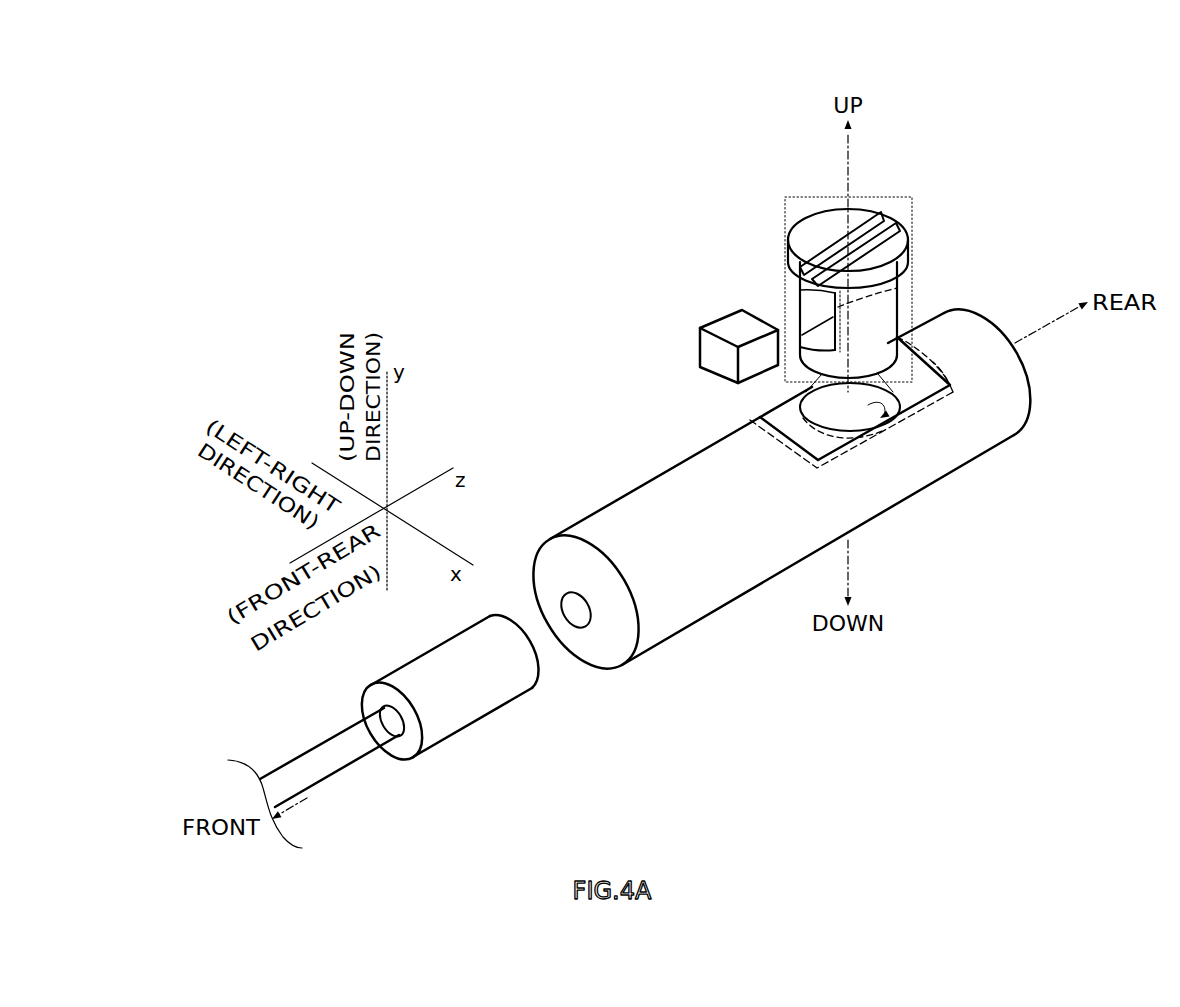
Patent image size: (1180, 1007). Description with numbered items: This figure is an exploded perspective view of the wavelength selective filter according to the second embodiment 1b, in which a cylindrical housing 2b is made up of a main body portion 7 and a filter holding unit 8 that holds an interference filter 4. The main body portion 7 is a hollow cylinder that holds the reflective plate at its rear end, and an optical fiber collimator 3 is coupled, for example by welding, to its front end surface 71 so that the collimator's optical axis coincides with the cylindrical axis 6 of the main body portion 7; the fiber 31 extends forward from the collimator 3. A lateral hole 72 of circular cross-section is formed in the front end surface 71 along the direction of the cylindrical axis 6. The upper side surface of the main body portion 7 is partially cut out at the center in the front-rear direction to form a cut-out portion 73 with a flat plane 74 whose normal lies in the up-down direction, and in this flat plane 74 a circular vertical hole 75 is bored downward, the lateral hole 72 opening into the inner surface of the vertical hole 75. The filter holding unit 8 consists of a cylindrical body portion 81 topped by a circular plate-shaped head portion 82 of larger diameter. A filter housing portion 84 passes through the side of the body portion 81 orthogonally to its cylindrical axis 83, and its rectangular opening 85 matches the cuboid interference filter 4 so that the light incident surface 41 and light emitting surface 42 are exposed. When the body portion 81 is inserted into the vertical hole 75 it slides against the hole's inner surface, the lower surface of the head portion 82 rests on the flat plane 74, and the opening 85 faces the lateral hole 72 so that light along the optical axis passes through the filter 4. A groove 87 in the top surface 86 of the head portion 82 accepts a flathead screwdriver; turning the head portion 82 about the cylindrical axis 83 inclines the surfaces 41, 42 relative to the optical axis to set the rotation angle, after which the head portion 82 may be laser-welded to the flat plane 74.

The second embodiment 1b is at (538, 383).
The cylindrical housing 2b is at (998, 227).
The optical fiber collimator 3 is at (410, 672).
The cable 31 is at (335, 743).
The interference filter 4 is at (730, 326).
The light incident surface 41 is at (712, 358).
The light emitting surface 42 is at (773, 316).
The cylindrical axis 6 is at (527, 637).
The main body portion 7 is at (977, 332).
The front end surface 71 is at (562, 573).
The lateral hole 72 is at (576, 615).
The cut-out portion 73 is at (920, 403).
The flat plane 74 is at (945, 377).
The vertical hole 75 is at (821, 410).
The filter holding unit 8 is at (905, 247).
The body portion 81 is at (880, 312).
The head portion 82 is at (810, 230).
The cylindrical axis 83 is at (832, 182).
The filter housing portion 84 is at (809, 290).
The opening 85 is at (905, 290).
The top surface 86 is at (899, 245).
The groove 87 is at (855, 212).